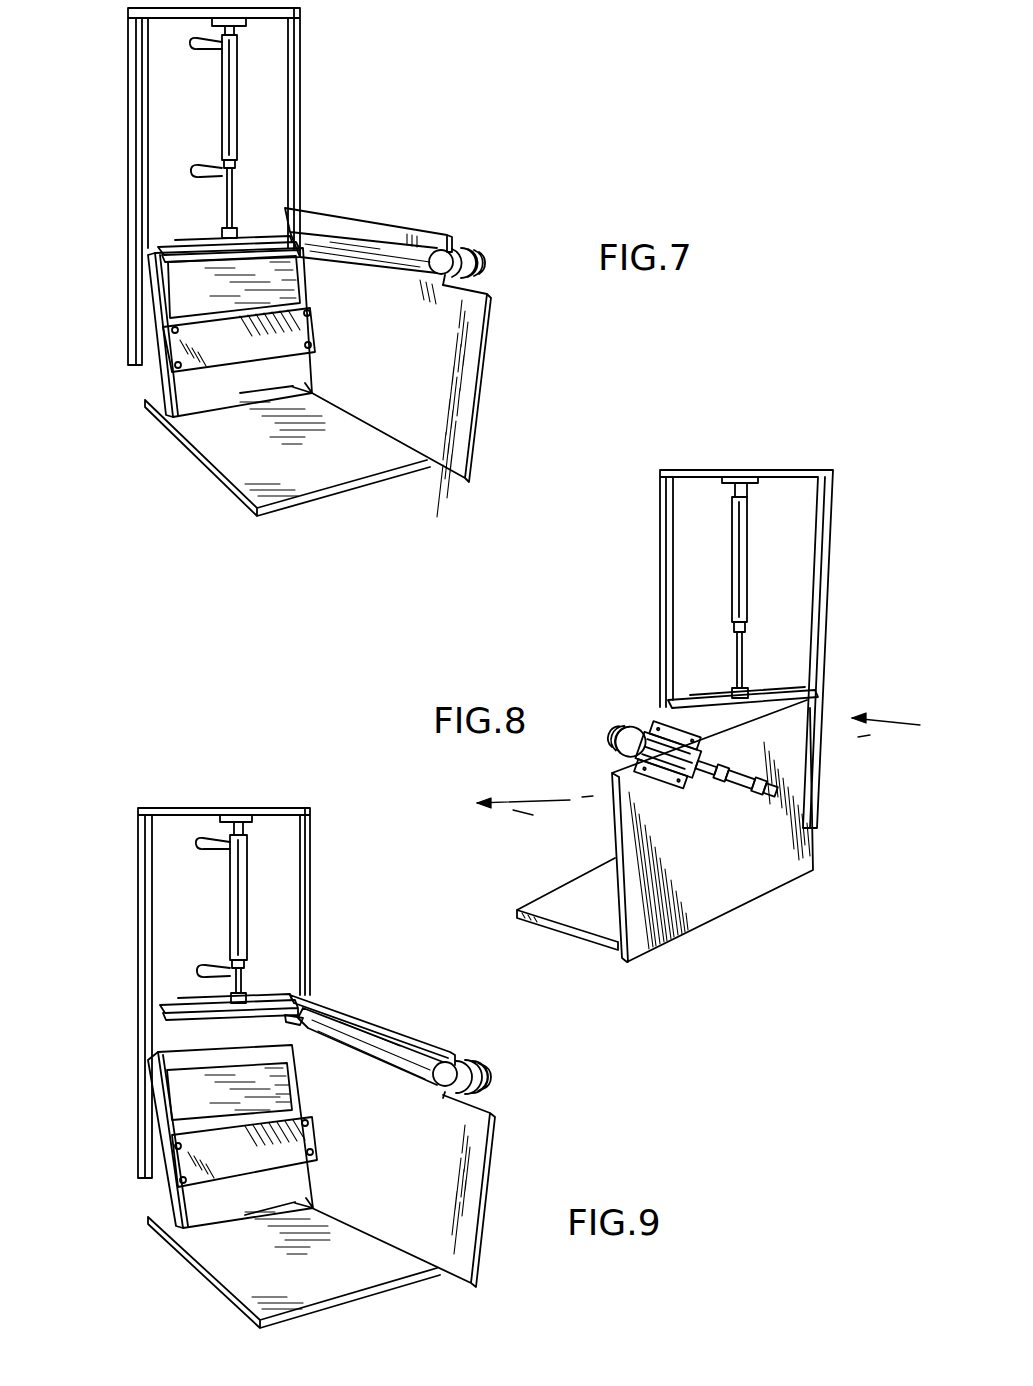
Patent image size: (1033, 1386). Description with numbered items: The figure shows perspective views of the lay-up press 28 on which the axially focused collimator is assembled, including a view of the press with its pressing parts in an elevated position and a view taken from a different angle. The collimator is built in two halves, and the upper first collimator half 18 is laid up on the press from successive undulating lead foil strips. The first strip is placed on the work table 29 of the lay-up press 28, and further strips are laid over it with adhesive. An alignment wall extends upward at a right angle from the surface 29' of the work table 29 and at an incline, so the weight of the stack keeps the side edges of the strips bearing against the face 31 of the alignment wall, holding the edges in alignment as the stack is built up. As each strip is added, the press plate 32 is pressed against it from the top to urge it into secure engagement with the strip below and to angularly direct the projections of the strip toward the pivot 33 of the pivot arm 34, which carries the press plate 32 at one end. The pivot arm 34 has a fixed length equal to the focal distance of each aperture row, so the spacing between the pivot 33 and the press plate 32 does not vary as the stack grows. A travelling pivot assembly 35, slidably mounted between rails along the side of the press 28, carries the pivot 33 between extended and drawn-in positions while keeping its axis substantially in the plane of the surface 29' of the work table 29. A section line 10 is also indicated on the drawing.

In FIG. 8, the section line 10 is at (681, 758).
In FIG. 7, the upper first collimator half 18 is at (192, 292).
In FIG. 9, the upper first collimator half 18 is at (192, 1113).
In FIG. 7, the lay-up press 28 is at (140, 357).
In FIG. 8, the lay-up press 28 is at (823, 652).
In FIG. 9, the lay-up press 28 is at (147, 1065).
In FIG. 7, the work table 29 is at (283, 341).
In FIG. 9, the work table 29 is at (296, 1152).
In FIG. 7, the surface of work table 29' is at (280, 292).
In FIG. 9, the surface of work table 29' is at (283, 1091).
In FIG. 7, the face of alignment wall 31 is at (158, 278).
In FIG. 9, the face of alignment wall 31 is at (302, 1017).
In FIG. 7, the press plate 32 is at (299, 248).
In FIG. 9, the press plate 32 is at (294, 996).
In FIG. 7, the pivot 33 is at (440, 247).
In FIG. 8, the pivot 33 is at (622, 735).
In FIG. 9, the pivot 33 is at (462, 1058).
In FIG. 7, the pivot arm 34 is at (383, 253).
In FIG. 9, the pivot arm 34 is at (388, 1047).
In FIG. 8, the travelling pivot assembly 35 is at (670, 787).